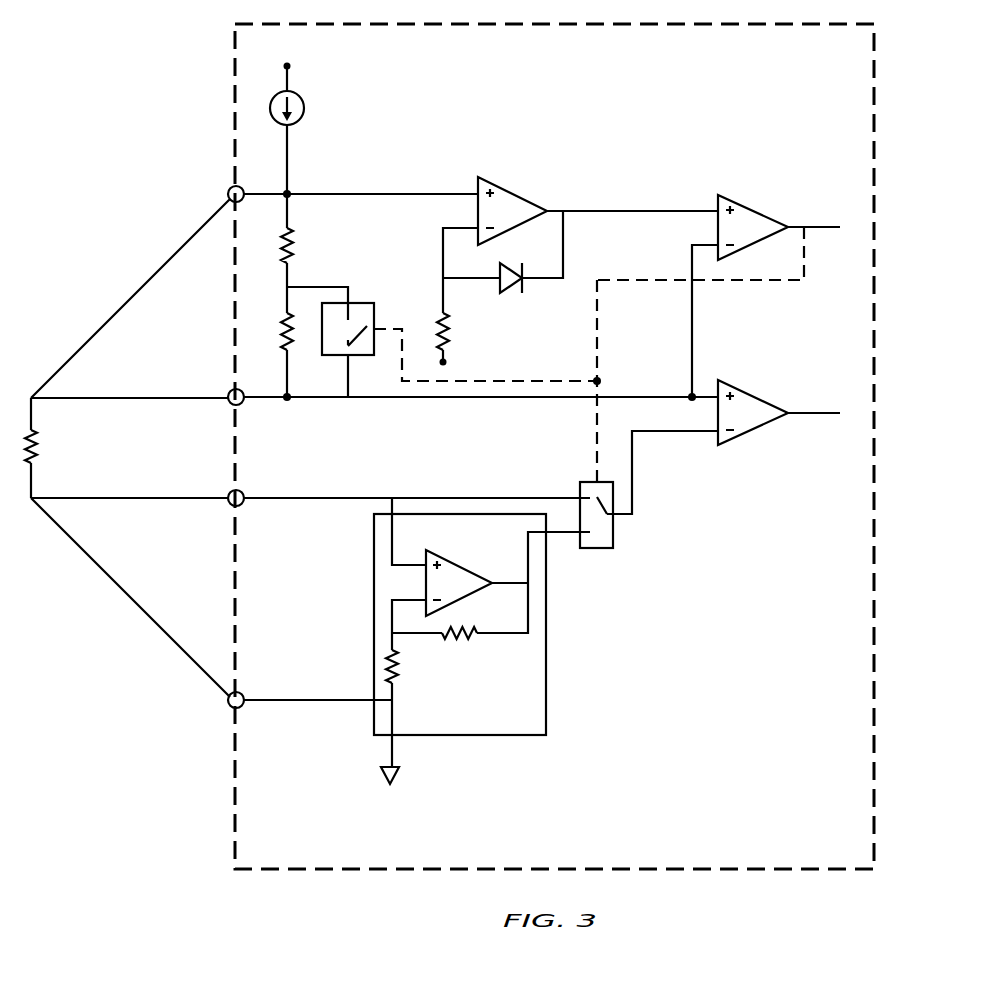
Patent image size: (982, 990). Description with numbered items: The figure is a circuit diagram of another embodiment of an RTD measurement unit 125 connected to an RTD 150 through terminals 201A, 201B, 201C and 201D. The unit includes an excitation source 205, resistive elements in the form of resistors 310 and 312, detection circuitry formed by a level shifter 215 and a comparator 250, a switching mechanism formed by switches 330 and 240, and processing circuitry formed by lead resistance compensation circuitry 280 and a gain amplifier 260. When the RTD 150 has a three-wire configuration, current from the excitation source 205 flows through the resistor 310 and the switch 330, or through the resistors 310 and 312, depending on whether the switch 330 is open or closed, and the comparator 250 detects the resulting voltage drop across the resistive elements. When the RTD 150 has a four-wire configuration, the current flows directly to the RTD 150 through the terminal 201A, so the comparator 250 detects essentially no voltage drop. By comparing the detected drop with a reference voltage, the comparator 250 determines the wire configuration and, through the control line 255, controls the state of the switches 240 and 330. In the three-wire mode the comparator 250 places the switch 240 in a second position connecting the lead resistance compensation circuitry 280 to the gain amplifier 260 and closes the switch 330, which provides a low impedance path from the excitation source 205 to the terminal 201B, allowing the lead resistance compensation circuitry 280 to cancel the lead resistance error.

The RTD measurement unit 125 is at (856, 861).
The RTD 150 is at (54, 448).
The terminal 201A is at (229, 189).
The terminal 201B is at (229, 391).
The terminal 201C is at (229, 492).
The terminal 201D is at (228, 708).
The excitation source 205 is at (305, 104).
The level shifter 215 is at (518, 190).
The switch 240 is at (616, 527).
The comparator 250 is at (734, 199).
The control line 255 is at (596, 368).
The gain amplifier 260 is at (734, 387).
The lead resistance compensation circuitry 280 is at (547, 596).
The resistor 310 is at (293, 231).
The resistor 312 is at (286, 316).
The switch 330 is at (357, 301).